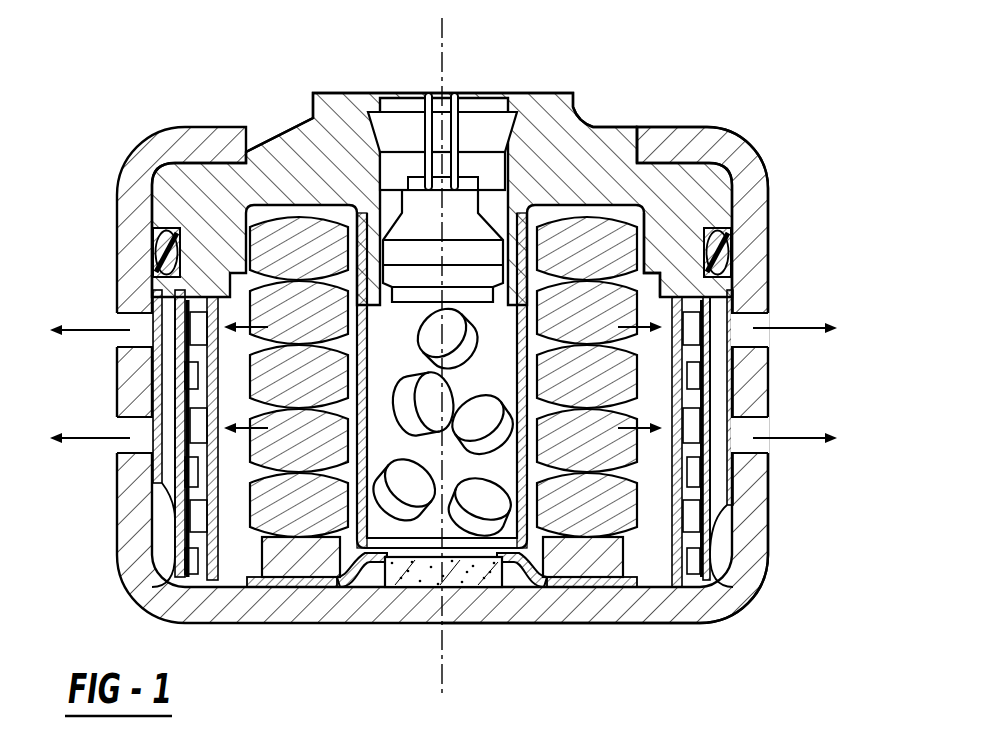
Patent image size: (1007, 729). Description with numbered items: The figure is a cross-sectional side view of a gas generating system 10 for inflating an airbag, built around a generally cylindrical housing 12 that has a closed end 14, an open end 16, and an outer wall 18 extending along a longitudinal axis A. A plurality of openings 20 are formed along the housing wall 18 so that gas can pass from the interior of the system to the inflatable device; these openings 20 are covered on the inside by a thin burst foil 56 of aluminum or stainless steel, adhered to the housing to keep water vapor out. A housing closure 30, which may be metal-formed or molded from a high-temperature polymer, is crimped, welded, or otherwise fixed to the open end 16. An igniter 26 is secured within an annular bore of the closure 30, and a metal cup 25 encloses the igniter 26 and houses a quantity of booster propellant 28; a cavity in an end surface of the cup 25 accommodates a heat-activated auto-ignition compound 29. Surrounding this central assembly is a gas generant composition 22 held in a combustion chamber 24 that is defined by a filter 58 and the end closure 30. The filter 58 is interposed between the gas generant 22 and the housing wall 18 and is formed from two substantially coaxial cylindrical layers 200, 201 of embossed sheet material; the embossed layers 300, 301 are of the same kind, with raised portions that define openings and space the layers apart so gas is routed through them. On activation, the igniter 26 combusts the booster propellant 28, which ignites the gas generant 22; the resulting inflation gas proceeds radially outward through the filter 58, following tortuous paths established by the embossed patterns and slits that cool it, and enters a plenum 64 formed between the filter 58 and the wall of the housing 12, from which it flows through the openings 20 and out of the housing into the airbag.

The gas generating system 10 is at (866, 574).
The housing 12 is at (771, 208).
The closed end 14 is at (760, 612).
The open end 16 is at (612, 84).
The outer wall 18 is at (760, 253).
The openings 20 is at (128, 427).
The gas generant composition 22 is at (603, 227).
The combustion chamber 24 is at (643, 263).
The cup 25 is at (365, 540).
The igniter 26 is at (403, 97).
The booster propellant 28 is at (470, 520).
The auto-ignition compound 29 is at (483, 580).
The housing closure 30 is at (530, 93).
The foil 56 is at (150, 465).
The filter 58 is at (673, 605).
The plenum 64 is at (720, 388).
The first cylindrical layer 200 is at (213, 565).
The second cylindrical layer 201 is at (170, 535).
The first layer 300 is at (700, 543).
The second layer 301 is at (707, 513).
The longitudinal axis A is at (442, 43).